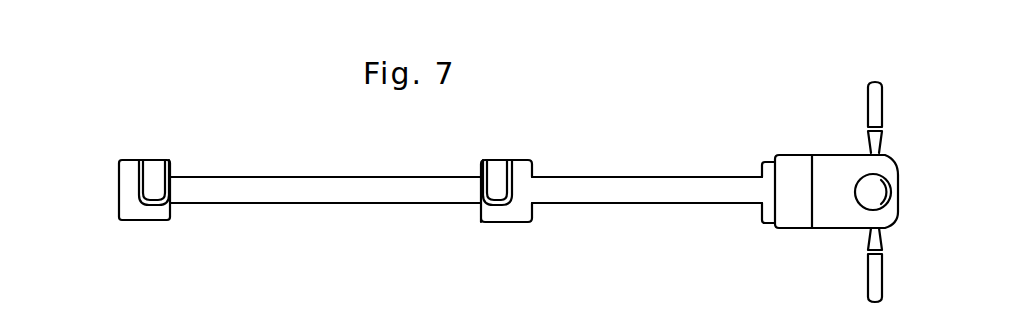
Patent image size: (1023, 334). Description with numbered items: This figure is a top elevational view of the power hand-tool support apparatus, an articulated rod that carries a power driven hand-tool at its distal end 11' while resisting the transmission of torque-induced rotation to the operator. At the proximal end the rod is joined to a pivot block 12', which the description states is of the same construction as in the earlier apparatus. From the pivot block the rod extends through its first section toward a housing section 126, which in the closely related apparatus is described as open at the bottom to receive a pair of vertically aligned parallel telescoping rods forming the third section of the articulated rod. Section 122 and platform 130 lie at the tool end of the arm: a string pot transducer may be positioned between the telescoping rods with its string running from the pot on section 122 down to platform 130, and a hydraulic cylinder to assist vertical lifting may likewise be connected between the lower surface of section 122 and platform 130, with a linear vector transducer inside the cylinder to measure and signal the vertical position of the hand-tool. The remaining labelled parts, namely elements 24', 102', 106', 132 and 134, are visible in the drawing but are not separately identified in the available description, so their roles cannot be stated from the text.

The pivot block 12' is at (154, 164).
The slot 102' is at (185, 166).
The shaft 24' is at (325, 170).
The coupling block 106' is at (534, 166).
The section 122 is at (597, 190).
The housing section 126 is at (793, 170).
The platform 130 is at (830, 212).
The pivot pin 132 is at (883, 107).
The aperture 134 is at (877, 198).
The distal end 11' is at (864, 185).